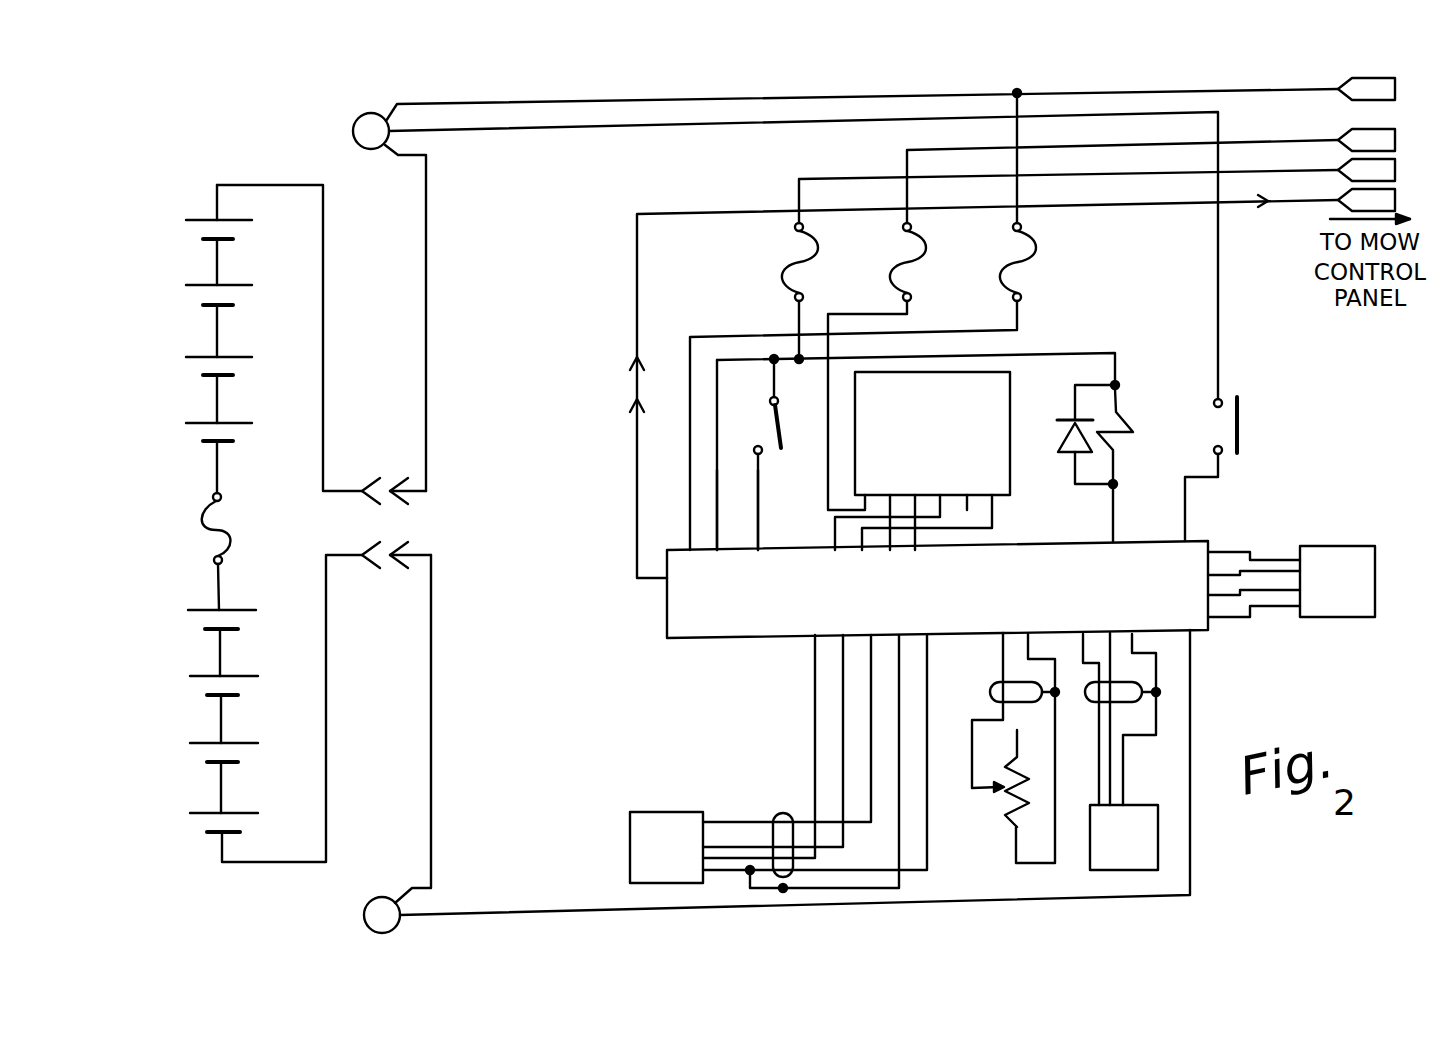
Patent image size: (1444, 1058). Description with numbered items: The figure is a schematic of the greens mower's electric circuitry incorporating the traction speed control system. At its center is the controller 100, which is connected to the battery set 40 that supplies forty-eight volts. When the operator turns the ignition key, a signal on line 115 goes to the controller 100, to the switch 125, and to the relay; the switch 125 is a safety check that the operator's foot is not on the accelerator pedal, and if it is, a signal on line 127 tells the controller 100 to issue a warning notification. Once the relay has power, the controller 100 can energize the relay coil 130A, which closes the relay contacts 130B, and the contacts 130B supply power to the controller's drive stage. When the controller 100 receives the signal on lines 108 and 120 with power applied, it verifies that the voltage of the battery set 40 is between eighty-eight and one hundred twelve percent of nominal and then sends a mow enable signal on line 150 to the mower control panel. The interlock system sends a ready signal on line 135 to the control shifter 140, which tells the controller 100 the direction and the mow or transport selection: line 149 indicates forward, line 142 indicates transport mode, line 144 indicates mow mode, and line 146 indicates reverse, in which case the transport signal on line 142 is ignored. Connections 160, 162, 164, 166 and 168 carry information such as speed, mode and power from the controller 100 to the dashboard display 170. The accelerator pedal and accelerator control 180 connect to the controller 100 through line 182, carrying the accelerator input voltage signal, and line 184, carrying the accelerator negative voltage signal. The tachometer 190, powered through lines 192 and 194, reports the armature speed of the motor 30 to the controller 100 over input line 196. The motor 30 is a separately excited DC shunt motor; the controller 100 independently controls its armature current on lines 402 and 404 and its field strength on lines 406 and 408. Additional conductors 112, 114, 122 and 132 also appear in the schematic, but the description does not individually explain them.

The battery set 40 is at (294, 501).
The line 108 is at (429, 255).
The negative power line 112 is at (433, 693).
The line 135 is at (1048, 147).
The line 115 is at (1127, 177).
The line 150 is at (637, 396).
The switch 125 is at (771, 425).
The line 127 is at (761, 481).
The control shifter 140 is at (984, 408).
The relay coil 130A is at (1123, 408).
The relay contacts 130B is at (1242, 420).
The breaker output line 132 is at (1113, 522).
The switch output line 114 is at (1188, 505).
The controller 100 is at (748, 642).
The line 120 is at (717, 553).
The controller input terminal 122 is at (758, 553).
The line 149 is at (835, 553).
The line 146 is at (862, 553).
The line 142 is at (890, 553).
The line 144 is at (917, 554).
The connection 160 is at (815, 636).
The connection 162 is at (843, 636).
The connection 164 is at (885, 615).
The connection 166 is at (899, 636).
The connection 168 is at (927, 636).
The dashboard display 170 is at (684, 862).
The accelerator control 180 is at (1000, 805).
The line 182 is at (1003, 630).
The line 184 is at (1050, 612).
The tachometer 190 is at (1144, 852).
The line 192 is at (1086, 630).
The line 194 is at (1110, 630).
The input line 196 is at (1134, 632).
The motor 30 is at (1358, 600).
The line 402 is at (1219, 551).
The line 404 is at (1208, 575).
The line 406 is at (1207, 595).
The line 408 is at (1234, 622).